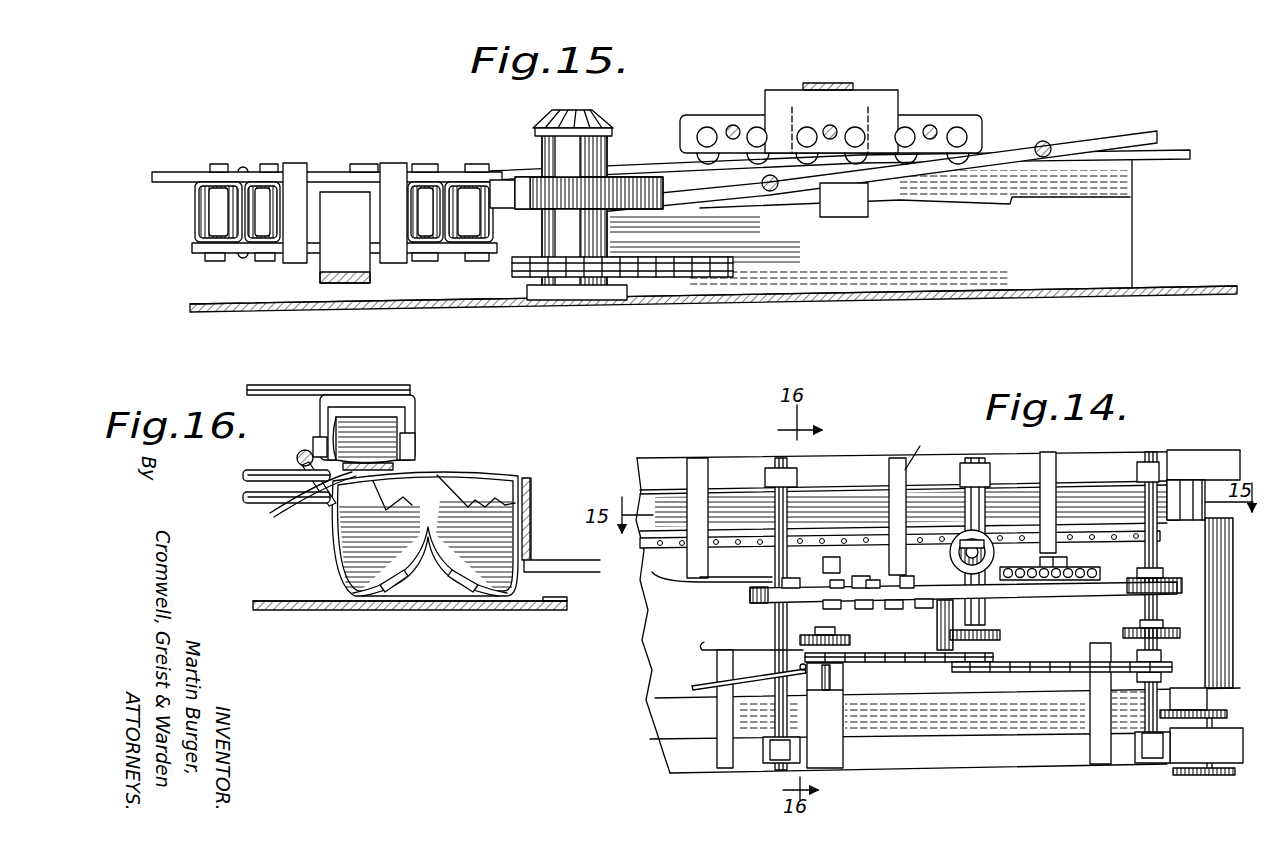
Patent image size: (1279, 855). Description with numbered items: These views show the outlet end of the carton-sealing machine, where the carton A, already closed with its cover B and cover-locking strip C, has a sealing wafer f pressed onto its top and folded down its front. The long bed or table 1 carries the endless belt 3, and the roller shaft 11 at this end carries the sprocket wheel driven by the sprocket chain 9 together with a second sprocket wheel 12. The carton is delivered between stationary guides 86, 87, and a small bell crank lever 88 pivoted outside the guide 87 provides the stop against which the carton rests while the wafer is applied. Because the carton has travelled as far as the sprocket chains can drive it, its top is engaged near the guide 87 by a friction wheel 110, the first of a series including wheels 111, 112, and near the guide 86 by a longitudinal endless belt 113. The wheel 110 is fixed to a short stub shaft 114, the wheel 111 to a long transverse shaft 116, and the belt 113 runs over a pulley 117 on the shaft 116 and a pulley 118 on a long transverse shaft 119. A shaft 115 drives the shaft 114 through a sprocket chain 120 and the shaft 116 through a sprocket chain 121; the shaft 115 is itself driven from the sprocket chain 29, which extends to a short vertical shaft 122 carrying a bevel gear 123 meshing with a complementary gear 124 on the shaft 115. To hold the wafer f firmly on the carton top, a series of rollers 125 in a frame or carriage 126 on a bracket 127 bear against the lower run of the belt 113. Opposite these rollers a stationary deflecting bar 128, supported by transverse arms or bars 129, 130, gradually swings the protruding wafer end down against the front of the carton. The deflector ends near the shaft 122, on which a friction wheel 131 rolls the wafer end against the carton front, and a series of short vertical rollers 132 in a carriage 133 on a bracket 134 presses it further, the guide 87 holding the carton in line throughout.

In FIG. 15, the bed or table 1 is at (1150, 294).
In FIG. 16, the bed or table 1 is at (520, 612).
In FIG. 14, the bed or table 1 is at (650, 722).
In FIG. 15, the endless belt 3 is at (1162, 285).
In FIG. 16, the endless belt 3 is at (283, 600).
In FIG. 14, the endless belt 3 is at (1095, 532).
In FIG. 14, the sprocket chain 9 is at (1189, 745).
In FIG. 14, the shaft 11 is at (1195, 698).
In FIG. 14, the second sprocket wheel 12 is at (1198, 776).
In FIG. 15, the sprocket chain 29 is at (716, 256).
In FIG. 14, the sprocket chain 29 is at (657, 569).
In FIG. 14, the stationary guide 86 is at (668, 584).
In FIG. 16, the stationary guide 87 is at (532, 490).
In FIG. 14, the stationary guide 87 is at (700, 655).
In FIG. 14, the bell crank lever 88 is at (805, 662).
In FIG. 14, the friction wheel 110 is at (852, 636).
In FIG. 14, the friction wheel 111 is at (988, 625).
In FIG. 14, the friction wheel 112 is at (1185, 618).
In FIG. 15, the longitudinal endless belt 113 is at (1178, 162).
In FIG. 16, the longitudinal endless belt 113 is at (407, 463).
In FIG. 14, the longitudinal endless belt 113 is at (963, 597).
In FIG. 14, the stub shaft 114 is at (833, 628).
In FIG. 14, the shaft 115 is at (986, 600).
In FIG. 14, the long transverse shaft 116 is at (1142, 612).
In FIG. 14, the pulley 117 is at (1170, 577).
In FIG. 14, the pulley 118 is at (748, 597).
In FIG. 14, the long transverse shaft 119 is at (788, 602).
In FIG. 14, the sprocket chain 120 is at (908, 665).
In FIG. 14, the sprocket chain 121 is at (1040, 661).
In FIG. 14, the short vertical shaft 122 is at (1038, 550).
In FIG. 15, the bevel gear 123 is at (545, 122).
In FIG. 14, the bevel gear 123 is at (1050, 563).
In FIG. 14, the complementary gear 124 is at (960, 556).
In FIG. 15, the rollers 125 is at (710, 113).
In FIG. 16, the rollers 125 is at (365, 417).
In FIG. 14, the rollers 125 is at (853, 568).
In FIG. 15, the frame or carriage 126 is at (980, 118).
In FIG. 16, the frame or carriage 126 is at (402, 418).
In FIG. 15, the bracket 127 is at (845, 83).
In FIG. 16, the bracket 127 is at (270, 384).
In FIG. 14, the bracket 127 is at (912, 455).
In FIG. 15, the stationary deflecting bar 128 is at (1128, 120).
In FIG. 16, the stationary deflecting bar 128 is at (298, 455).
In FIG. 14, the stationary deflecting bar 128 is at (800, 582).
In FIG. 15, the transverse arm or bar 129 is at (1046, 130).
In FIG. 16, the transverse arm or bar 129 is at (240, 476).
In FIG. 14, the transverse arm or bar 129 is at (812, 480).
In FIG. 15, the transverse arm or bar 130 is at (770, 191).
In FIG. 16, the transverse arm or bar 130 is at (240, 498).
In FIG. 14, the transverse arm or bar 130 is at (933, 448).
In FIG. 15, the friction wheel 131 is at (553, 192).
In FIG. 14, the friction wheel 131 is at (958, 553).
In FIG. 15, the short vertical rollers 132 is at (210, 208).
In FIG. 14, the short vertical rollers 132 is at (1098, 576).
In FIG. 15, the frame or carriage 133 is at (200, 252).
In FIG. 14, the frame or carriage 133 is at (1080, 570).
In FIG. 15, the bracket 134 is at (345, 237).
In FIG. 14, the bracket 134 is at (1060, 466).
In FIG. 15, the carton A is at (1112, 230).
In FIG. 16, the carton A is at (432, 556).
In FIG. 14, the carton A is at (740, 626).
In FIG. 16, the cover B is at (488, 470).
In FIG. 15, the cover-locking strip C is at (1070, 186).
In FIG. 16, the cover-locking strip C is at (336, 492).
In FIG. 15, the sealing element or wafer f is at (850, 210).
In FIG. 16, the sealing element or wafer f is at (288, 520).
In FIG. 14, the sealing element or wafer f is at (835, 556).